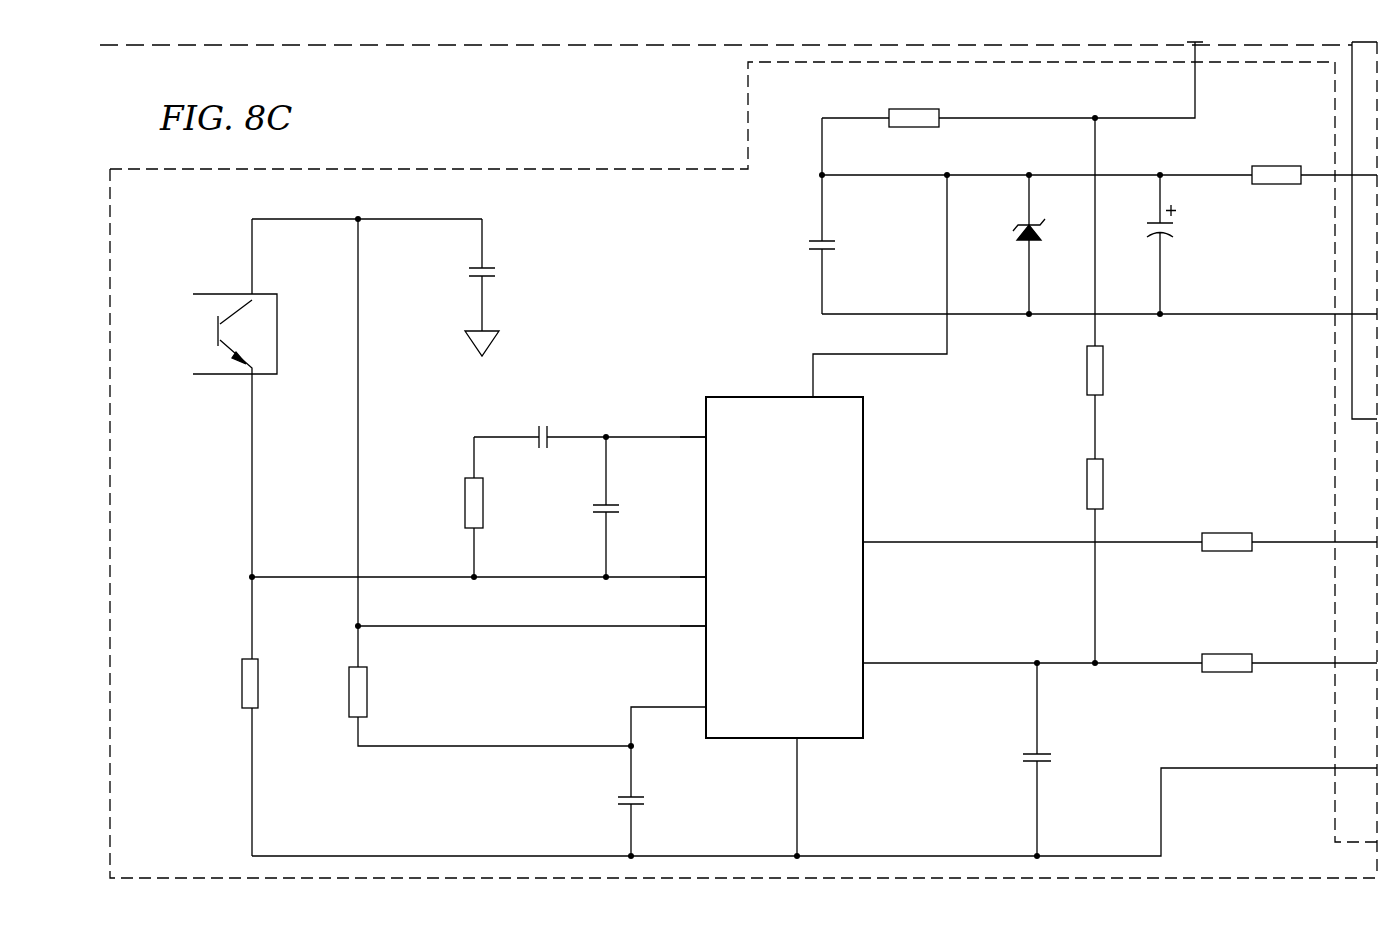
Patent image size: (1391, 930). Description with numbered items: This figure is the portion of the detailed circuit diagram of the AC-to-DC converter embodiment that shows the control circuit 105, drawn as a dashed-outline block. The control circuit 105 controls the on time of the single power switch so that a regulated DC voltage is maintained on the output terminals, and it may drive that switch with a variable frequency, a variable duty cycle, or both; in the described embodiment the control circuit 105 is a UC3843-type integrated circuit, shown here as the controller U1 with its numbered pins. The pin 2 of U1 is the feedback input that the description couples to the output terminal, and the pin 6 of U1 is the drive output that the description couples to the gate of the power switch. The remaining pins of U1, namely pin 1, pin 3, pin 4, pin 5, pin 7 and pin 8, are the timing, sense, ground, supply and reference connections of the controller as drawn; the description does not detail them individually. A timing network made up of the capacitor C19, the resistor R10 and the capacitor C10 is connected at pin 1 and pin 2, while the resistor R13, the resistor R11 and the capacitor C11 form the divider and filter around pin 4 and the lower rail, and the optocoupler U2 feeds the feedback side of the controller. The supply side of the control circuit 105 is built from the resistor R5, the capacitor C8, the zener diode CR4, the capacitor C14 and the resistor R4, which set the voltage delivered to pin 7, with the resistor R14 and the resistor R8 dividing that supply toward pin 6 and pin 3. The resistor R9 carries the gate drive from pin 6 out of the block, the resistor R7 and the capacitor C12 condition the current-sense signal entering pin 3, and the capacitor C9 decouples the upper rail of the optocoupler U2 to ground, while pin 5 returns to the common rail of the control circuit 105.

The control circuit 105 is at (662, 161).
The PWM controller 3842 U1 is at (916, 515).
The optocoupler MOC8103 U2 is at (206, 296).
The resistor 24 ohm 1/2W R4 is at (1314, 186).
The resistor 100k 2W R5 is at (1012, 98).
The resistor 1k R7 is at (1289, 691).
The resistor 680k 1/4W R8 is at (1068, 553).
The resistor 20 ohm R9 is at (1289, 513).
The resistor 3.3k R10 is at (450, 507).
The resistor 5.62k 1% R11 is at (384, 692).
The resistor 3.3k R13 is at (276, 683).
The resistor 300k 1/4W R14 is at (1121, 288).
The capacitor 0.1uF 100V C8 is at (796, 216).
The capacitor 0.1uF 100V C9 is at (507, 287).
The capacitor 0.068uF 63V C10 is at (633, 507).
The capacitor 6800pF 100V C11 is at (666, 801).
The capacitor 470pF 100V C12 is at (1066, 759).
The capacitor 47uF 25V C14 is at (1185, 244).
The capacitor C19 is at (590, 422).
The zener diode 1N4747 CR4 is at (1012, 230).
The U1 pin 1 is at (707, 441).
The pin 2 is at (707, 580).
The U1 pin 3 is at (1021, 665).
The U1 pin 4 is at (682, 722).
The U1 pin 5 is at (796, 783).
The pin 6 is at (1021, 543).
The U1 pin 7 is at (877, 300).
The U1 pin 8 is at (707, 625).